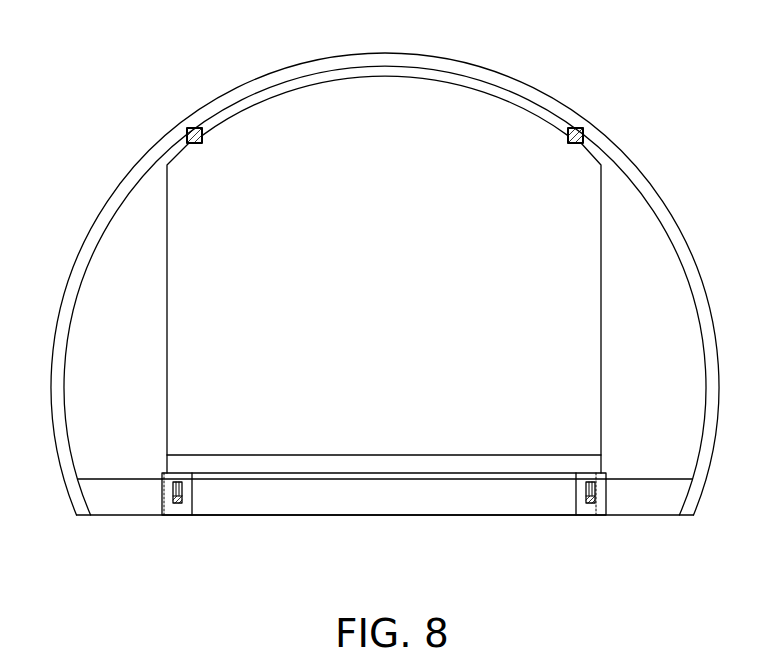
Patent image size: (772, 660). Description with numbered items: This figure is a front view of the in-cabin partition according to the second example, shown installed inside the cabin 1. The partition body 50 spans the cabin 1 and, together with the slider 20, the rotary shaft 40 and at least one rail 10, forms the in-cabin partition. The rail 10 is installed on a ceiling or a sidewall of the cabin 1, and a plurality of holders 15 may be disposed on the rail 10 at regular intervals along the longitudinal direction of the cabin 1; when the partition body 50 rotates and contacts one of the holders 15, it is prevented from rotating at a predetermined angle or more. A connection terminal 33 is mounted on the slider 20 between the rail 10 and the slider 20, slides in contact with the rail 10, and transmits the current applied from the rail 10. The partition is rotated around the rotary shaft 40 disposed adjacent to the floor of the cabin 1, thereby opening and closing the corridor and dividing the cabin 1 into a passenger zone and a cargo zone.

The cabin 1 is at (116, 297).
The partition body 50 is at (362, 118).
The holder 15 is at (191, 129).
The slider 20 is at (590, 473).
The rotary shaft 40 is at (492, 462).
The connection terminal 33 is at (590, 504).
The rail 10 is at (606, 496).